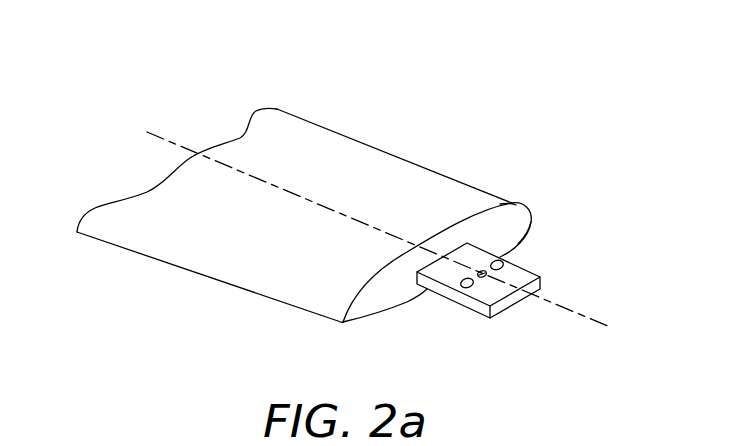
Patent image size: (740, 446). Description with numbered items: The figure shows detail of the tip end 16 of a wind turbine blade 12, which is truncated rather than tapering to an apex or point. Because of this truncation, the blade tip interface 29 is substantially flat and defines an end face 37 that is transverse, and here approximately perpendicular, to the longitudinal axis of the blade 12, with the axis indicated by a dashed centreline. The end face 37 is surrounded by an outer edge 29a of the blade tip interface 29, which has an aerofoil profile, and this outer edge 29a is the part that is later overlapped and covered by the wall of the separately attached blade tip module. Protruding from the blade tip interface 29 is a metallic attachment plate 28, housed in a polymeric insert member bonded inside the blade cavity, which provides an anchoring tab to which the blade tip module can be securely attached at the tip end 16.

The blade 12 is at (370, 144).
The tip end 16 is at (314, 322).
The blade tip interface 29 is at (395, 316).
The outer edge 29a is at (515, 203).
The end face 37 is at (515, 230).
The attachment plate 28 is at (502, 305).